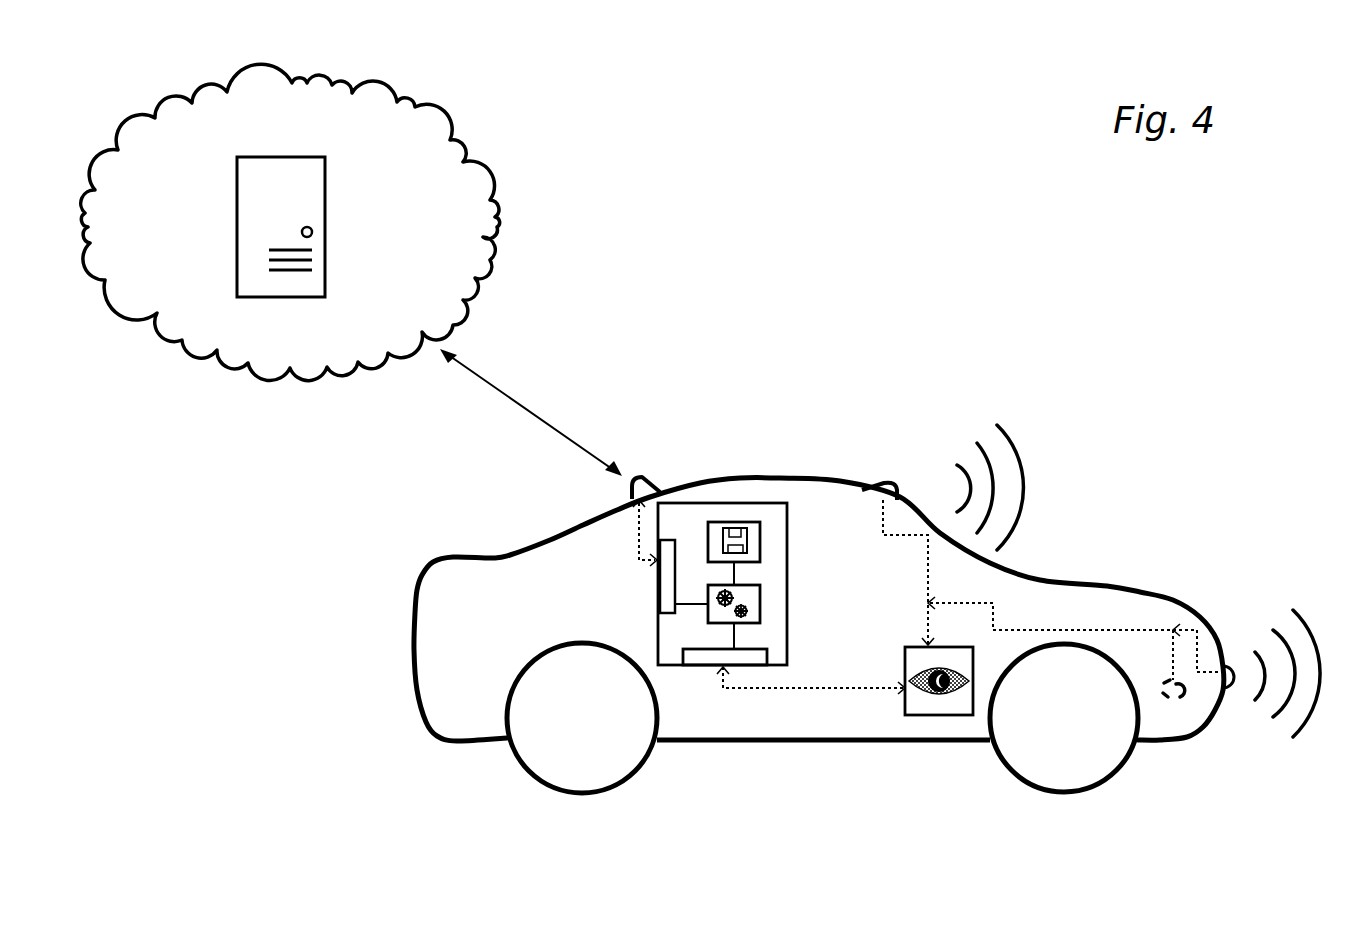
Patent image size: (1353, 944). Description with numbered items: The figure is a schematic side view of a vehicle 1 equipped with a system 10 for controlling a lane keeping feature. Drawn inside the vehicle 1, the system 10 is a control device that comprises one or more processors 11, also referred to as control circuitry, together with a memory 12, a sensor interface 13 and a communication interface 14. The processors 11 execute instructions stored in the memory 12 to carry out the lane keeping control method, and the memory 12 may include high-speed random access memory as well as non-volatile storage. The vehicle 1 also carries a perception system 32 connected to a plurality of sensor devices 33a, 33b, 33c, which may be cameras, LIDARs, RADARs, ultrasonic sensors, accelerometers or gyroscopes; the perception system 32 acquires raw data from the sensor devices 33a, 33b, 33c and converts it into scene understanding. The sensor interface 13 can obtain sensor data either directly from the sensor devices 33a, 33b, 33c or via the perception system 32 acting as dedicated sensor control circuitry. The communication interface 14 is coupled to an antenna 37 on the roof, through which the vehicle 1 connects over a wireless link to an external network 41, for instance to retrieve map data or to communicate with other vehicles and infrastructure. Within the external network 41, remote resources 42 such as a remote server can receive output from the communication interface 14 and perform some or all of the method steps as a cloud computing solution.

The vehicle 1 is at (435, 733).
The system 10 is at (713, 552).
The processor 11 is at (761, 610).
The memory 12 is at (733, 522).
The sensor interface 13 is at (710, 665).
The communication interface 14 is at (662, 590).
The perception system 32 is at (953, 715).
The sensor device 33a is at (1182, 695).
The sensor device 33b is at (1230, 665).
The sensor device 33c is at (888, 484).
The antenna 37 is at (645, 473).
The external network 41 is at (422, 112).
The remote resources 42 is at (268, 157).